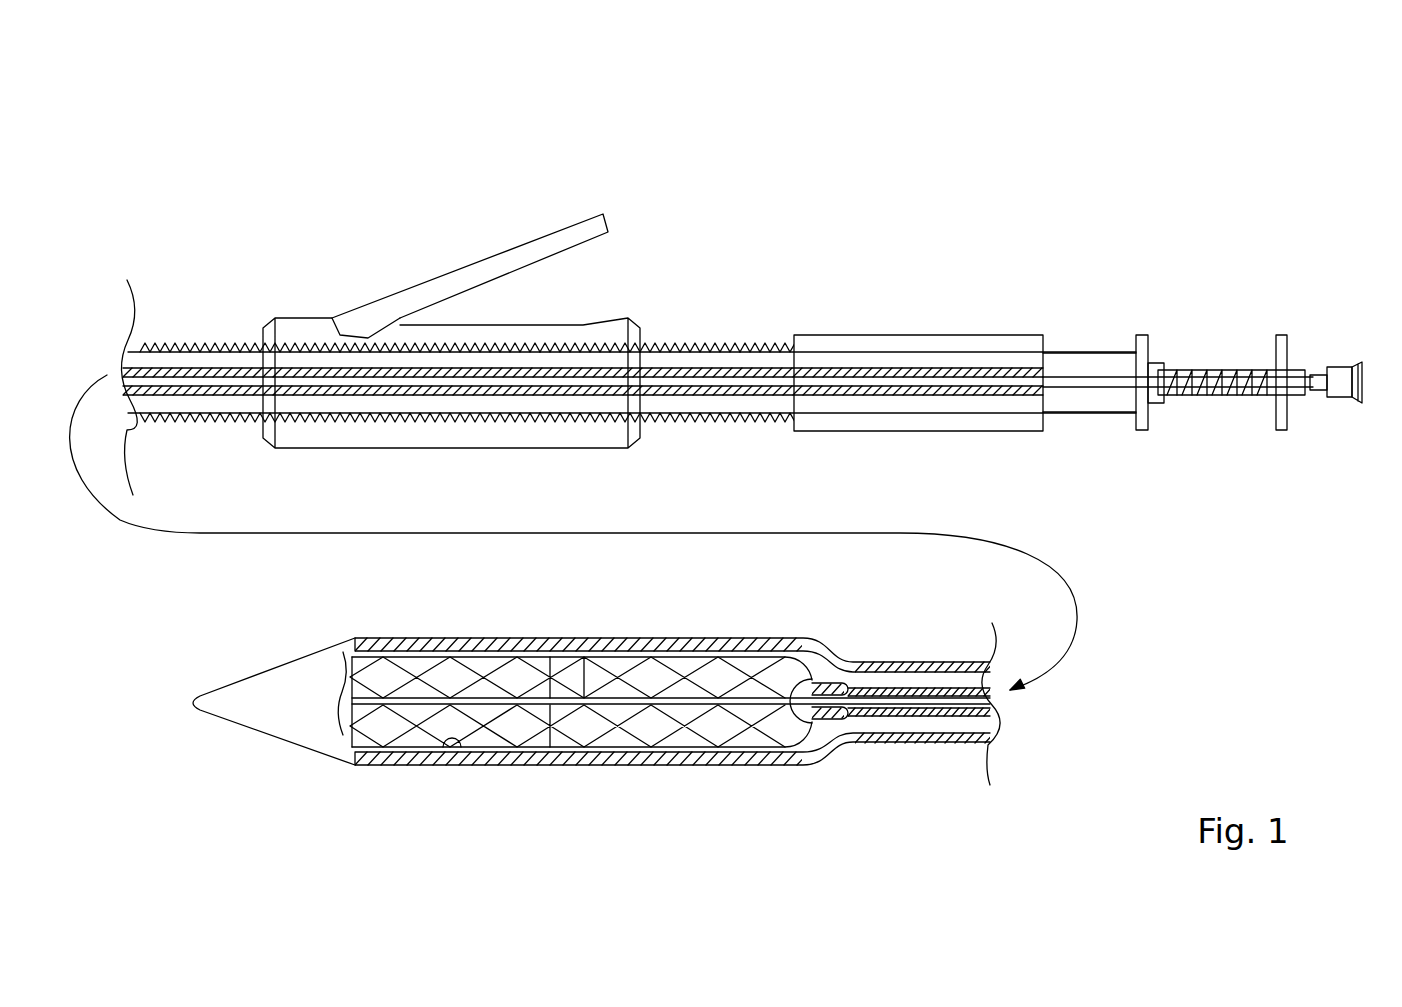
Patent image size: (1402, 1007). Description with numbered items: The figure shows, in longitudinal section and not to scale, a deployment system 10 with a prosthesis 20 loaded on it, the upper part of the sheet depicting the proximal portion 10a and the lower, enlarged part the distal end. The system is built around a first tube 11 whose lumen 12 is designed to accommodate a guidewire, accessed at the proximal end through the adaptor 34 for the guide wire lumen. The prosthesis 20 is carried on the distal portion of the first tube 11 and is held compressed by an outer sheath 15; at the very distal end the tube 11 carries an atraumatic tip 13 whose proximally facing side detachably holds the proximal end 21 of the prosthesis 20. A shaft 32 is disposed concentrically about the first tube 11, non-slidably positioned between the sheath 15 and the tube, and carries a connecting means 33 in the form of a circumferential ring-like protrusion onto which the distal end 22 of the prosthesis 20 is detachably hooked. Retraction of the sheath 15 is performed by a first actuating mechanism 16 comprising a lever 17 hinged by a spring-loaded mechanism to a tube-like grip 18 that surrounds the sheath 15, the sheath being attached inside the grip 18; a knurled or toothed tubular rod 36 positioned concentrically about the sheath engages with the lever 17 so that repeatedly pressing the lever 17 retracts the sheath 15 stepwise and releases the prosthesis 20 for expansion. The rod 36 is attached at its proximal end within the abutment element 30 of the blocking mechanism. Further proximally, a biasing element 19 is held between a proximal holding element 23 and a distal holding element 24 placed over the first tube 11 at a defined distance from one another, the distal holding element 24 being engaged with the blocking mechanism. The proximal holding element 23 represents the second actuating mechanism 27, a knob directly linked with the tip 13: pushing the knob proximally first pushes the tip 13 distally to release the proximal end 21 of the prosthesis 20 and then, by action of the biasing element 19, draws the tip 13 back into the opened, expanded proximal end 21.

The deployment system 10 is at (573, 357).
The proximal portion 10a is at (1064, 264).
The first tube 11 is at (1080, 388).
The lumen 12 is at (1090, 382).
The tip 13 is at (252, 735).
The outer sheath 15 is at (670, 753).
The first actuating mechanism 16 is at (451, 311).
The lever 17 is at (528, 243).
The tube-like grip 18 is at (525, 450).
The biasing element 19 is at (1222, 370).
The prosthesis 20 is at (475, 798).
The proximal end of the prosthesis 21 is at (355, 738).
The distal end of the prosthesis 22 is at (838, 743).
The proximal holding element 23 is at (1290, 428).
The distal holding element 24 is at (1150, 420).
The second actuating mechanism 27 is at (1284, 340).
The abutment element 30 is at (930, 432).
The shaft 32 is at (928, 712).
The connecting means 33 is at (818, 676).
The adaptor for the guide wire lumen 34 is at (1345, 365).
The knurled or toothed tubular rod 36 is at (686, 343).